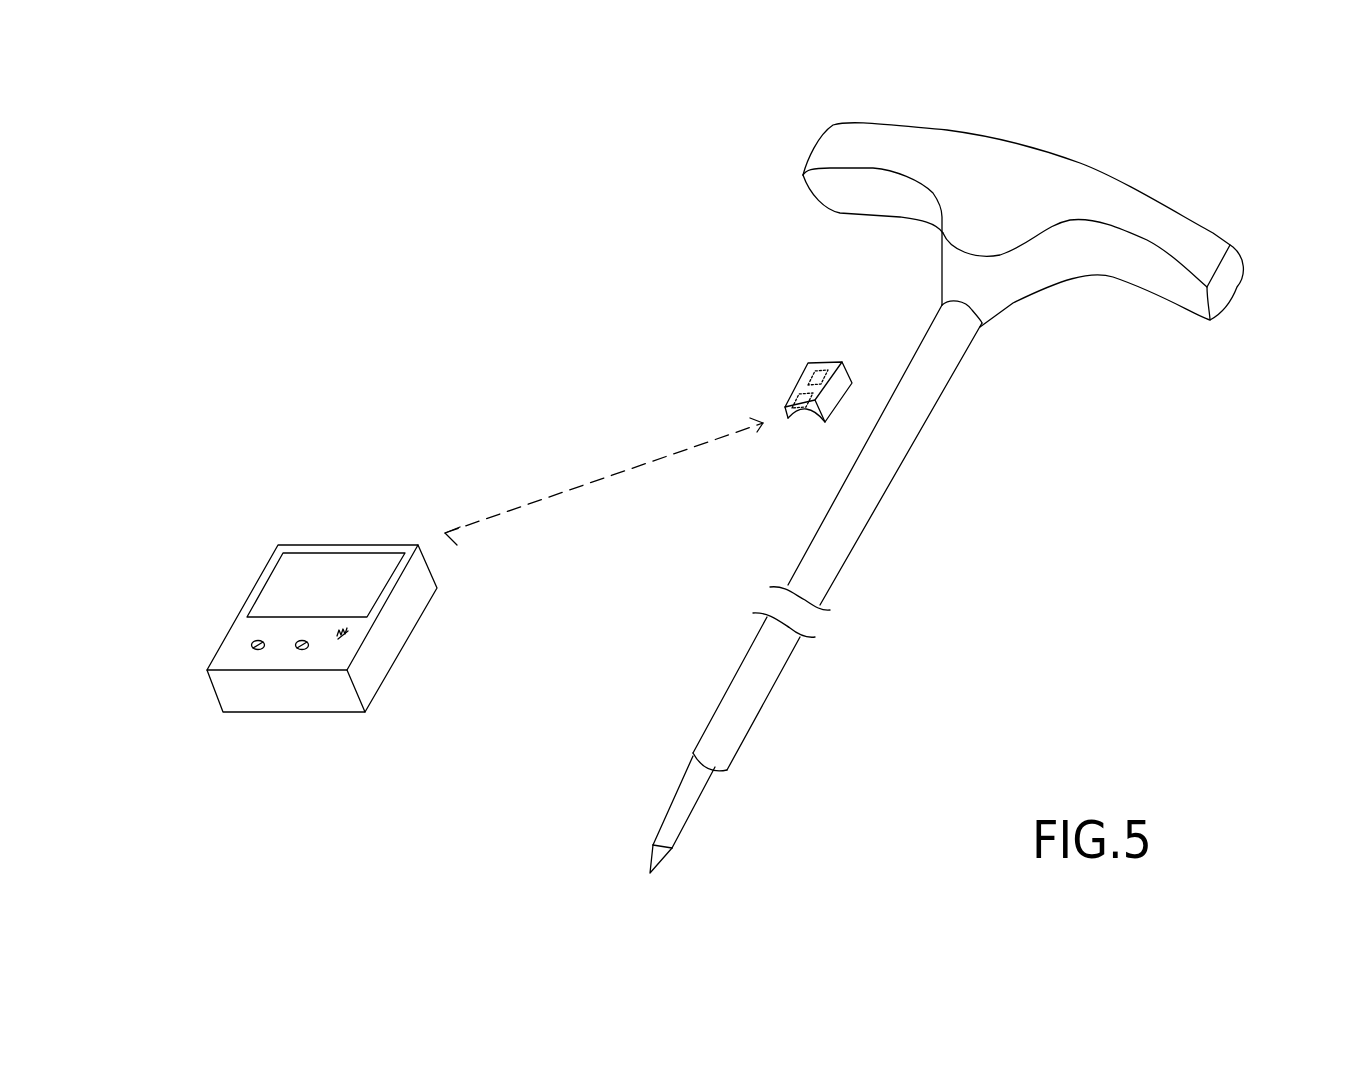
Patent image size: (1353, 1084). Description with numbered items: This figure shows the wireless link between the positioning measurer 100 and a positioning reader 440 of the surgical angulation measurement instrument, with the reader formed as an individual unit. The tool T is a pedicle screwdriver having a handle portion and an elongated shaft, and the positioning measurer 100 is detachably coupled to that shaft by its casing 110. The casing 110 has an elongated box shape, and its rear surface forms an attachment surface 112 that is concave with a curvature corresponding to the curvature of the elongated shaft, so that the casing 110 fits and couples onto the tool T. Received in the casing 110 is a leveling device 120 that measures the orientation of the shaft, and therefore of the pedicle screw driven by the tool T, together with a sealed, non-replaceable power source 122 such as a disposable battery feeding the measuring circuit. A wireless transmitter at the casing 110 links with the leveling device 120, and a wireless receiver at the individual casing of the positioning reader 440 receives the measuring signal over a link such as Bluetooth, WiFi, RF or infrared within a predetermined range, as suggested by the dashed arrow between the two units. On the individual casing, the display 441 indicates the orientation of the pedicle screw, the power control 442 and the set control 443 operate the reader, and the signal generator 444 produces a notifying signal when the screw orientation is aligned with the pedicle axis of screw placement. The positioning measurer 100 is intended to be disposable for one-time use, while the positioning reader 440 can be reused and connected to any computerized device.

The positioning measurer 100 is at (790, 233).
The casing 110 is at (832, 363).
The attachment surface 112 is at (803, 422).
The leveling device 120 is at (813, 372).
The power source 122 is at (798, 397).
The positioning reader 440 is at (405, 375).
The display 441 is at (377, 575).
The power control 442 is at (255, 645).
The set control 443 is at (293, 642).
The signal generator 444 is at (343, 630).
The tool T is at (908, 413).